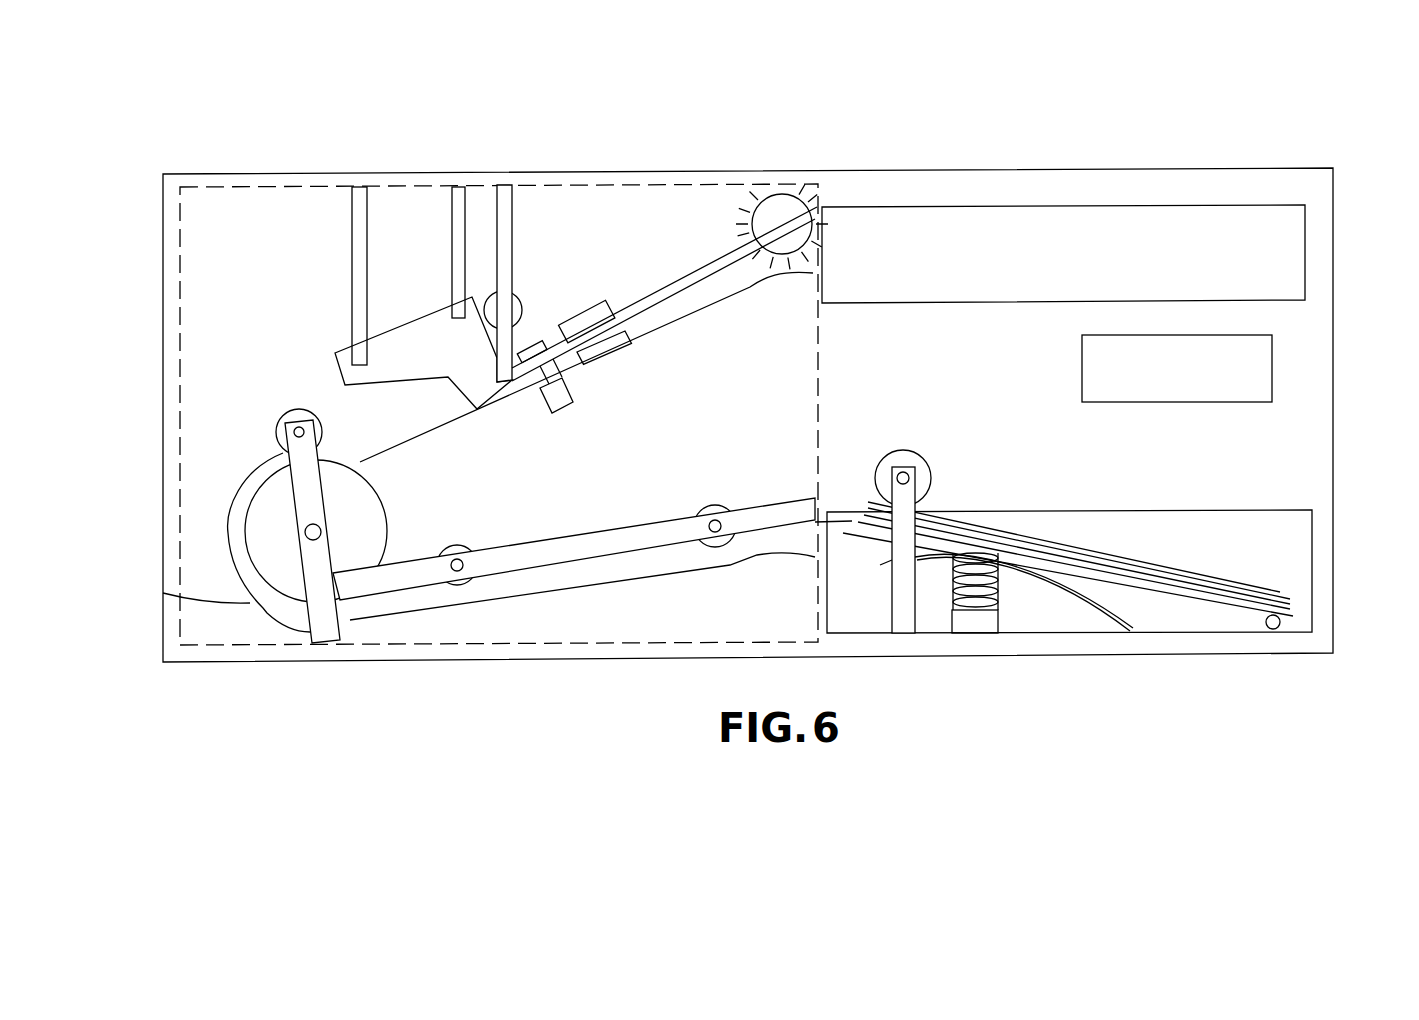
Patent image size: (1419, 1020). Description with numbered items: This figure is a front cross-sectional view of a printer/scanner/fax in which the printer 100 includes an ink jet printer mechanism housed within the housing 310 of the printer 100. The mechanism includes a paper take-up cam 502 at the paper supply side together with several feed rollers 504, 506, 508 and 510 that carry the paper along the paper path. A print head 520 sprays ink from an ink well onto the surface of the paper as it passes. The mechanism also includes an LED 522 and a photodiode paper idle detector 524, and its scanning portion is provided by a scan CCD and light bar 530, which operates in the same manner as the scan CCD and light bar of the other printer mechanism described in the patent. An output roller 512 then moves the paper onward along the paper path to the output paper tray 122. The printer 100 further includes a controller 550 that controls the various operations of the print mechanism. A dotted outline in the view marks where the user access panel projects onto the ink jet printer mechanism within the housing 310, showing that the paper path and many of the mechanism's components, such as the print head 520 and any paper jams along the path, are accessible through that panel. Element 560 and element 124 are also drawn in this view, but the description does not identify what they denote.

The printer 100 is at (946, 107).
The housing 310 is at (1178, 182).
The output paper tray 122 is at (1287, 258).
The controller 550 is at (1258, 378).
The print head 520 is at (420, 337).
The LED 522 is at (533, 343).
The scan CCD and light bar 530 is at (597, 326).
The photodiode paper idle detector 524 is at (563, 403).
The output roller 512 is at (770, 218).
The feed roller 510 is at (297, 413).
The feed roller 508 is at (370, 510).
The feed roller 506 is at (450, 540).
The feed roller 504 is at (738, 522).
The paper take-up cam 502 is at (912, 458).
The belt 560 is at (250, 603).
The sheet tray 124 is at (1290, 568).